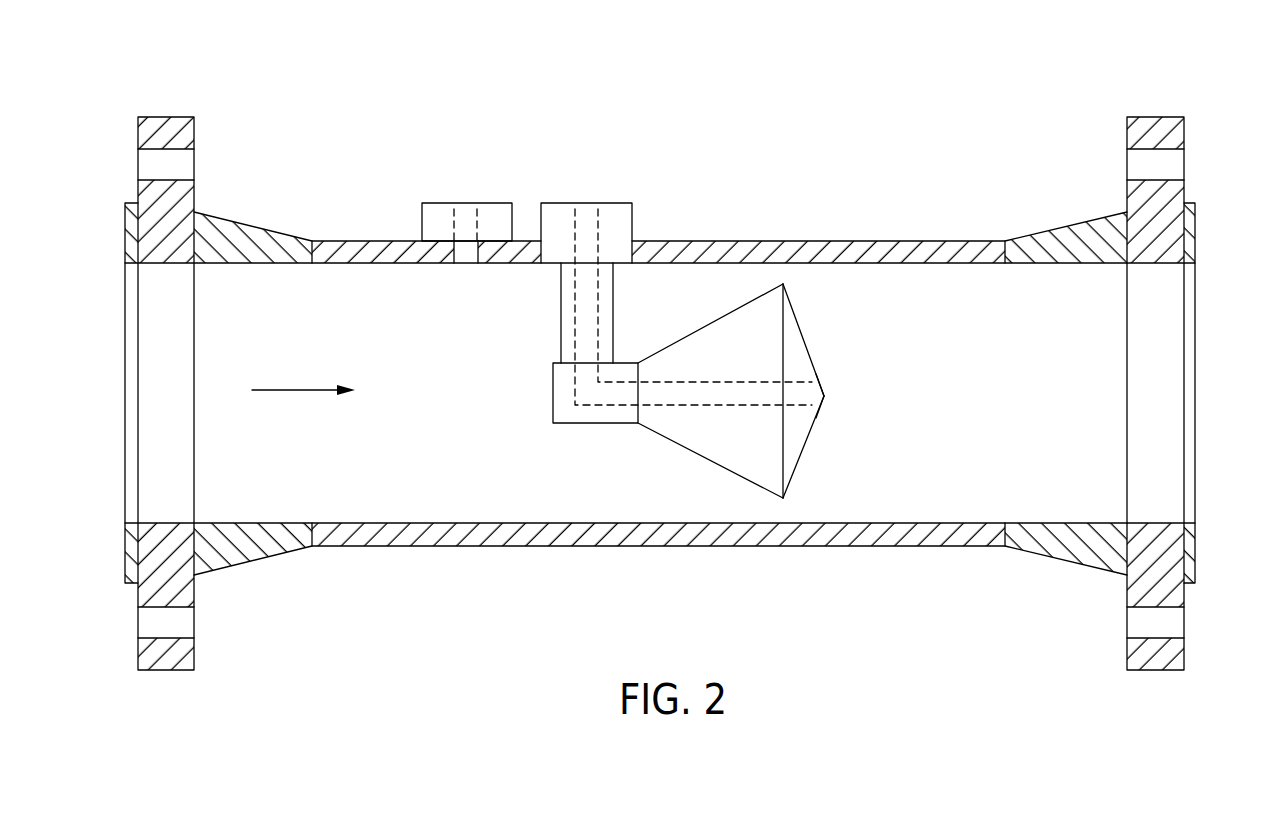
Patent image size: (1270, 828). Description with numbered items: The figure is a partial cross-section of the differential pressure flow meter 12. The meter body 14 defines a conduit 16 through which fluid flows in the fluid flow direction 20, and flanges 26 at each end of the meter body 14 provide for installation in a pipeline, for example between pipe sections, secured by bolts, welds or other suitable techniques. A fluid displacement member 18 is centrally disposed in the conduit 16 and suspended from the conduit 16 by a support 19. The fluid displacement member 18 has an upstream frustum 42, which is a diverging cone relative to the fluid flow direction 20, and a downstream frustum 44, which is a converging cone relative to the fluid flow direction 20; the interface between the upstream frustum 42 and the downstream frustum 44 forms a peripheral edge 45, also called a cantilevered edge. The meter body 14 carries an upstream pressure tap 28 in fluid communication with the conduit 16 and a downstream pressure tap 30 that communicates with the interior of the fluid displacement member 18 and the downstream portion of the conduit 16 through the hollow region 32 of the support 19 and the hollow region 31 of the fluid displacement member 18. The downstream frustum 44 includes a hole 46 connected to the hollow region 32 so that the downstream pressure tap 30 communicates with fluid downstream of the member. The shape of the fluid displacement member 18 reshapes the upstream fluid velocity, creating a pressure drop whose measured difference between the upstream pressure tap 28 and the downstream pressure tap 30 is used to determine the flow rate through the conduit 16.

The differential pressure flow meter 12 is at (845, 112).
The meter body 14 is at (840, 548).
The conduit 16 is at (1104, 471).
The fluid displacement member 18 is at (690, 333).
The support 19 is at (561, 332).
The fluid flow direction 20 is at (297, 390).
The flanges 26 is at (165, 117).
The upstream pressure tap 28 is at (421, 218).
The downstream pressure tap 30 is at (632, 218).
The hollow region 31 is at (563, 287).
The hollow region 32 is at (612, 405).
The upstream frustum 42 is at (700, 462).
The downstream frustum 44 is at (815, 333).
The peripheral edge 45 is at (783, 498).
The hole 46 is at (824, 396).